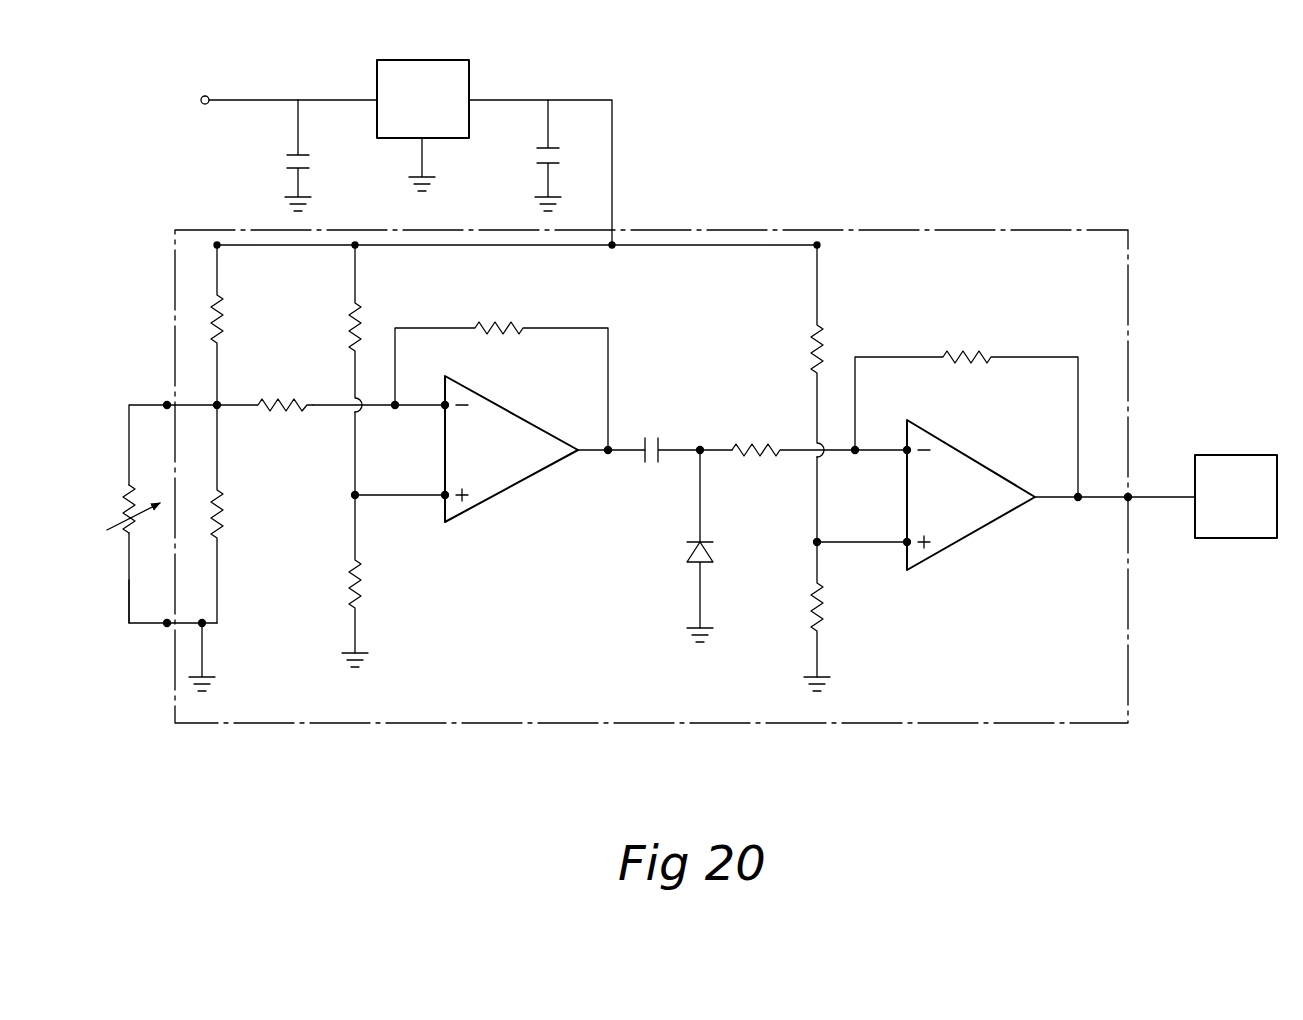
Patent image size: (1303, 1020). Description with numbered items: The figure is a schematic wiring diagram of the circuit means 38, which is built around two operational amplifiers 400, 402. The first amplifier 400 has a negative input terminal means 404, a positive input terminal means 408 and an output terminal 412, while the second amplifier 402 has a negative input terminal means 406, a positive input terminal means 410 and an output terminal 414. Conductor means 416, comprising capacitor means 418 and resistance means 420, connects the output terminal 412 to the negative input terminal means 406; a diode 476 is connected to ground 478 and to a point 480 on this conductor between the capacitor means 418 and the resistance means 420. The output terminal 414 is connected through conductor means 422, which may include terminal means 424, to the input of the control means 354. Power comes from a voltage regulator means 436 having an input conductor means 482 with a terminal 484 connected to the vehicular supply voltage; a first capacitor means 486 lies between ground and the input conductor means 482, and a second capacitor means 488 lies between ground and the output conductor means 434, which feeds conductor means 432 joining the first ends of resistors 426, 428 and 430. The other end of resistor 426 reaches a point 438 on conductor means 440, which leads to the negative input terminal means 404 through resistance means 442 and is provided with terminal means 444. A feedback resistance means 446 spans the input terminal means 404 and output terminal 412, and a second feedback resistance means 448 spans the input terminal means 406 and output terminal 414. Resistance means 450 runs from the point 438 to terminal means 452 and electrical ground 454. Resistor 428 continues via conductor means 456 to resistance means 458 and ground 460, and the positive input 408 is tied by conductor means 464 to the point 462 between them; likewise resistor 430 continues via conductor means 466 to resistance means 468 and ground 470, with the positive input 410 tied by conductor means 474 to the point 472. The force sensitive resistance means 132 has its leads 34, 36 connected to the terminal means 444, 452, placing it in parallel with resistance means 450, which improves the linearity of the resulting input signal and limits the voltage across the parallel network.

The lead 34 is at (128, 445).
The lead 36 is at (128, 575).
The circuit means 38 is at (980, 228).
The force sensitive resistance means 132 is at (139, 491).
The control means 354 is at (1212, 454).
The operational amplifier 400 is at (530, 482).
The operational amplifier 402 is at (978, 538).
The negative input terminal means 404 is at (445, 402).
The negative input terminal means 406 is at (907, 446).
The positive input terminal means 408 is at (442, 516).
The positive input terminal means 410 is at (905, 548).
The output terminal 412 is at (580, 447).
The output terminal 414 is at (1037, 494).
The conductor means 416 is at (798, 446).
The capacitor means 418 is at (663, 440).
The resistance means 420 is at (757, 446).
The conductor means 422 is at (1106, 500).
The terminal means 424 is at (1130, 494).
The resistor 426 is at (222, 316).
The resistor 428 is at (362, 316).
The resistor 430 is at (822, 346).
The conductor means 432 is at (716, 250).
The conductor means 434 is at (614, 168).
The voltage regulator means 436 is at (472, 78).
The point 438 is at (219, 402).
The conductor means 440 is at (336, 408).
The resistance means 442 is at (277, 402).
The terminal means 444 is at (167, 402).
The feedback resistance means 446 is at (500, 326).
The feedback resistance means 448 is at (950, 355).
The resistance means 450 is at (224, 508).
The terminal means 452 is at (165, 627).
The electrical ground 454 is at (215, 676).
The conductor means 456 is at (357, 470).
The resistance means 458 is at (363, 586).
The electrical ground 460 is at (365, 668).
The point 462 is at (353, 496).
The conductor means 464 is at (380, 498).
The conductor means 466 is at (812, 486).
The resistance means 468 is at (812, 615).
The electrical ground 470 is at (848, 678).
The point 472 is at (812, 543).
The conductor means 474 is at (860, 540).
The diode 476 is at (686, 552).
The ground 478 is at (690, 640).
The point 480 is at (696, 456).
The conductor means 482 is at (264, 100).
The terminal 484 is at (208, 96).
The capacitor means 486 is at (285, 160).
The capacitor means 488 is at (545, 163).